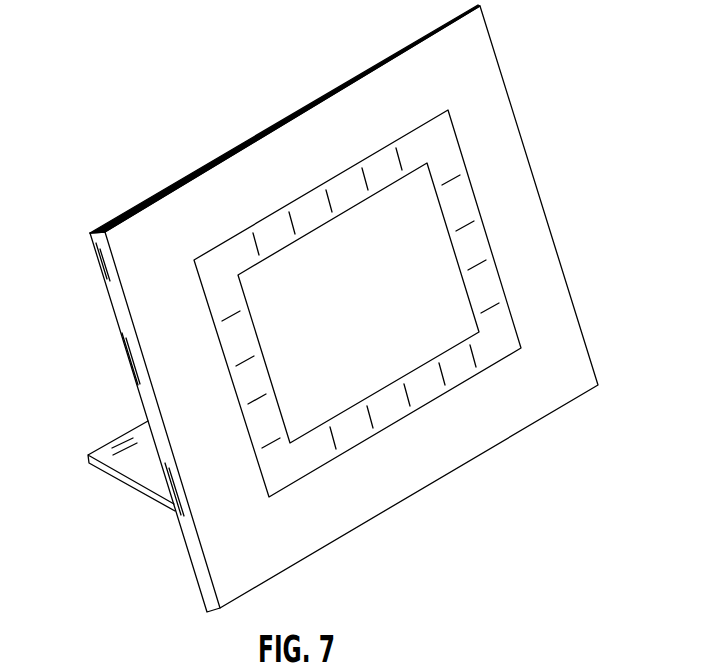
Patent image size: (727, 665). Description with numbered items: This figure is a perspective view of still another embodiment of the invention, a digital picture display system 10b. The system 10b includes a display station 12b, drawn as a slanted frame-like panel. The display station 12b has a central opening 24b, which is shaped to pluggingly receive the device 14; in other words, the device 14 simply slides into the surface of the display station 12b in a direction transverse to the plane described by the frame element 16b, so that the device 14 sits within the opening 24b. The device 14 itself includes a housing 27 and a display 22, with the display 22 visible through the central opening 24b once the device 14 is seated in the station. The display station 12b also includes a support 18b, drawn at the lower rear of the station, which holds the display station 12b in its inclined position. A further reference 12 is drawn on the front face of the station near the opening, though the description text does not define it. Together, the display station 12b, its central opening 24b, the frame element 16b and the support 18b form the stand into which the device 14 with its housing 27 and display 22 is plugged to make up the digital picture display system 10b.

The digital picture display system 10b is at (223, 148).
The bezel front face 12 is at (337, 197).
The display station 12b is at (541, 147).
The device 14 is at (500, 278).
The frame element 16b is at (148, 358).
The support 18b is at (137, 485).
The display 22 is at (403, 347).
The central opening 24b is at (218, 242).
The housing 27 is at (388, 410).